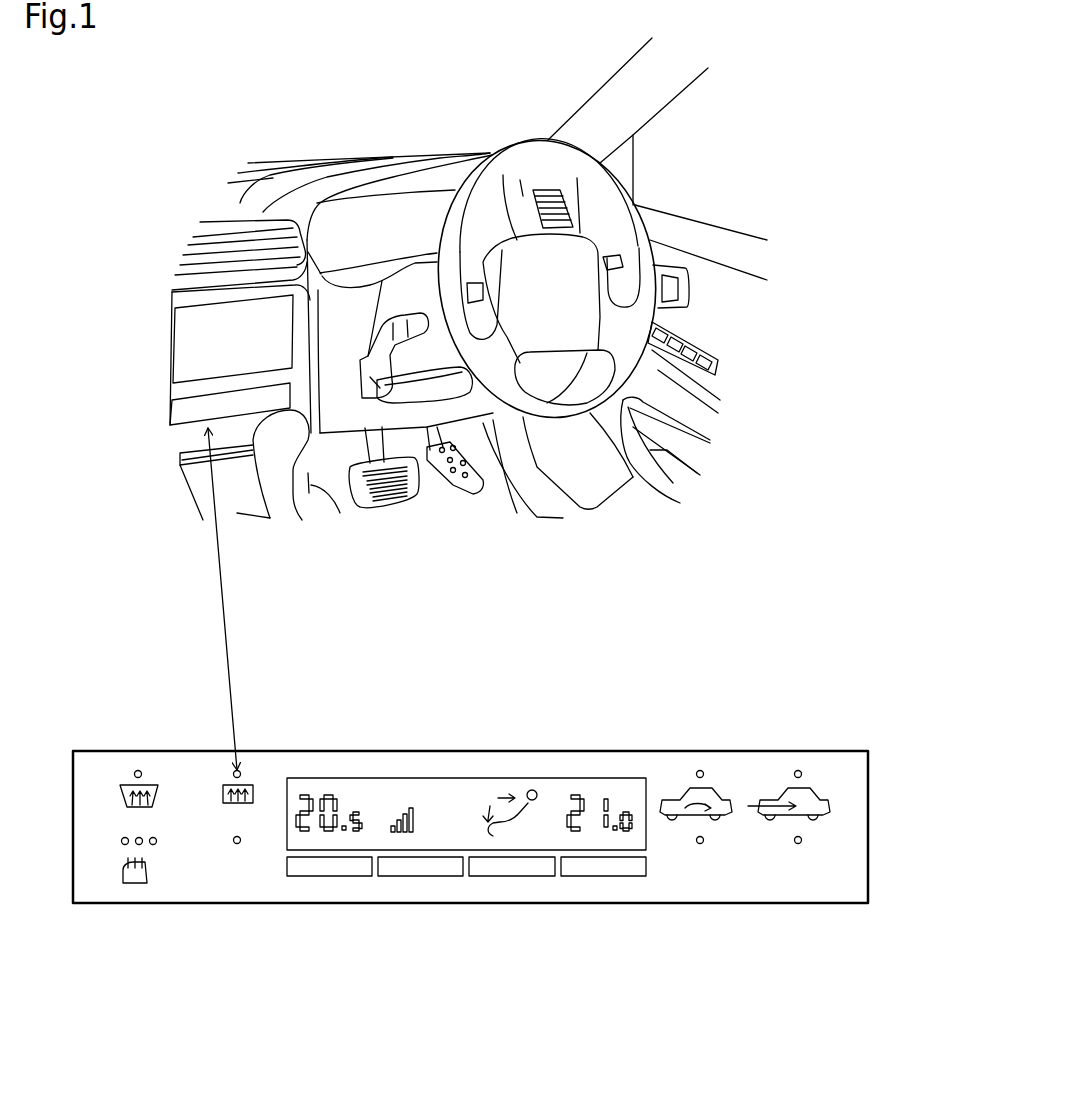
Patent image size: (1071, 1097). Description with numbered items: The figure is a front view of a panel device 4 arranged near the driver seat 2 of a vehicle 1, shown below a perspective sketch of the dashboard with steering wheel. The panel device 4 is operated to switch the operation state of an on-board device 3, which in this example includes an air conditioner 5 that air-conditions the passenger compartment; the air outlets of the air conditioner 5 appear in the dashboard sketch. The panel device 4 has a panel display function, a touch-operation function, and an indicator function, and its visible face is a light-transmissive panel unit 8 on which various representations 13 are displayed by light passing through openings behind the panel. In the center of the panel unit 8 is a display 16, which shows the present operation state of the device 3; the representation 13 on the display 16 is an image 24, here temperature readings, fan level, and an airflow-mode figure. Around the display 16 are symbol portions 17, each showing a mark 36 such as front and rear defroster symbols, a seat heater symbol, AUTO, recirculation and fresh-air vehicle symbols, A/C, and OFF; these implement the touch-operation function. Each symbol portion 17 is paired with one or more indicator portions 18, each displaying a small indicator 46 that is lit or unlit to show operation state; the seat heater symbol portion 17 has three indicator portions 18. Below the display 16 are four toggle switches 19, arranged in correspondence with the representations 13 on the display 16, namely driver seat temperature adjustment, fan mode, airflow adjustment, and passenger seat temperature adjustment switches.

The vehicle 1 is at (642, 48).
The driver seat 2 is at (442, 401).
The on-board device 3 is at (345, 190).
The panel device 4 is at (168, 417).
The air conditioner 5 is at (213, 221).
The panel unit 8 is at (90, 773).
The representation 13 is at (477, 816).
The display 16 is at (466, 765).
The symbol portion 17 is at (117, 796).
The indicator portion 18 is at (118, 841).
The switch 19 is at (410, 867).
The image 24 is at (469, 775).
The mark 36 is at (456, 853).
The indicator 46 is at (477, 815).